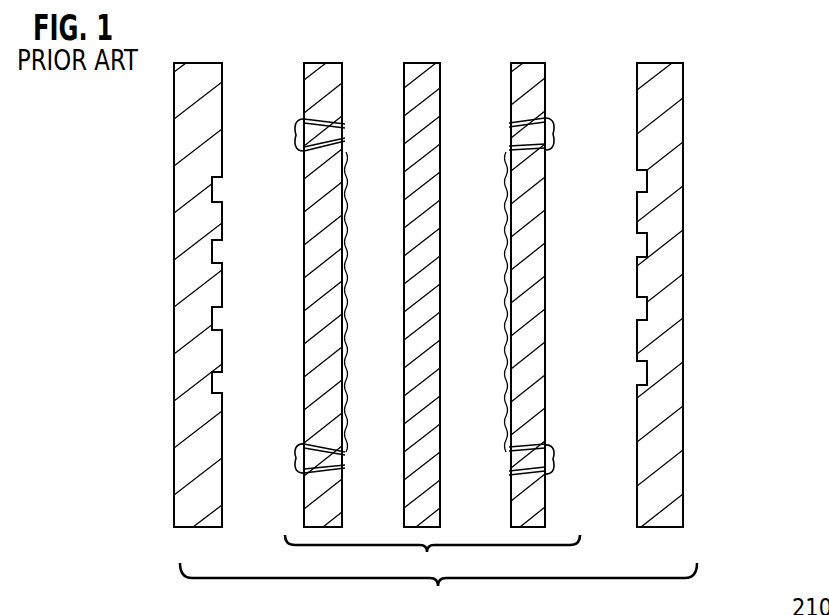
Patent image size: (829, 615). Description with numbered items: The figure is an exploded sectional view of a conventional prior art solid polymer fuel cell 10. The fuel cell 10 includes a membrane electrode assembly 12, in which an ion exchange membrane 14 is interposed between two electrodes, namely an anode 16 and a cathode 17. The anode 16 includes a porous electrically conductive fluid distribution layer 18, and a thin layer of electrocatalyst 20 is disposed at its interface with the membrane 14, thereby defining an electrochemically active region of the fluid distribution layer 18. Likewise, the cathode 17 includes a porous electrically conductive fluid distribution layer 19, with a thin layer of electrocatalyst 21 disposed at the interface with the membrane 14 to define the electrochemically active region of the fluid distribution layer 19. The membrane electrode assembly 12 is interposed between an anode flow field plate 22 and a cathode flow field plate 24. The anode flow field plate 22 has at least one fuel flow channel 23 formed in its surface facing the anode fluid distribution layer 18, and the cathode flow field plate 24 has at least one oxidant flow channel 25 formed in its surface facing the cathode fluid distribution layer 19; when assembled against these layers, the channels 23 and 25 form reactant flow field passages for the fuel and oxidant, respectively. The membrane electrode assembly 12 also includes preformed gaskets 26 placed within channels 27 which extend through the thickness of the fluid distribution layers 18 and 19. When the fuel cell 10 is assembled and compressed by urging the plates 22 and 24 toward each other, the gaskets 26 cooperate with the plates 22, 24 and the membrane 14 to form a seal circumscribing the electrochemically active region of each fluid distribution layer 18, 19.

The solid polymer fuel cell 10 is at (438, 589).
The membrane electrode assembly 12 is at (427, 556).
The ion exchange membrane 14 is at (440, 530).
The anode 16 is at (305, 513).
The cathode 17 is at (545, 527).
The anode fluid distribution layer 18 is at (306, 62).
The cathode fluid distribution layer 19 is at (545, 63).
The electrocatalyst layer 20 is at (347, 152).
The electrocatalyst layer 21 is at (506, 160).
The anode flow field plate 22 is at (185, 497).
The fuel flow channel 23 is at (212, 190).
The cathode flow field plate 24 is at (685, 487).
The oxidant flow channel 25 is at (647, 243).
The preformed gasket 26 is at (298, 130).
The channel 27 is at (307, 155).